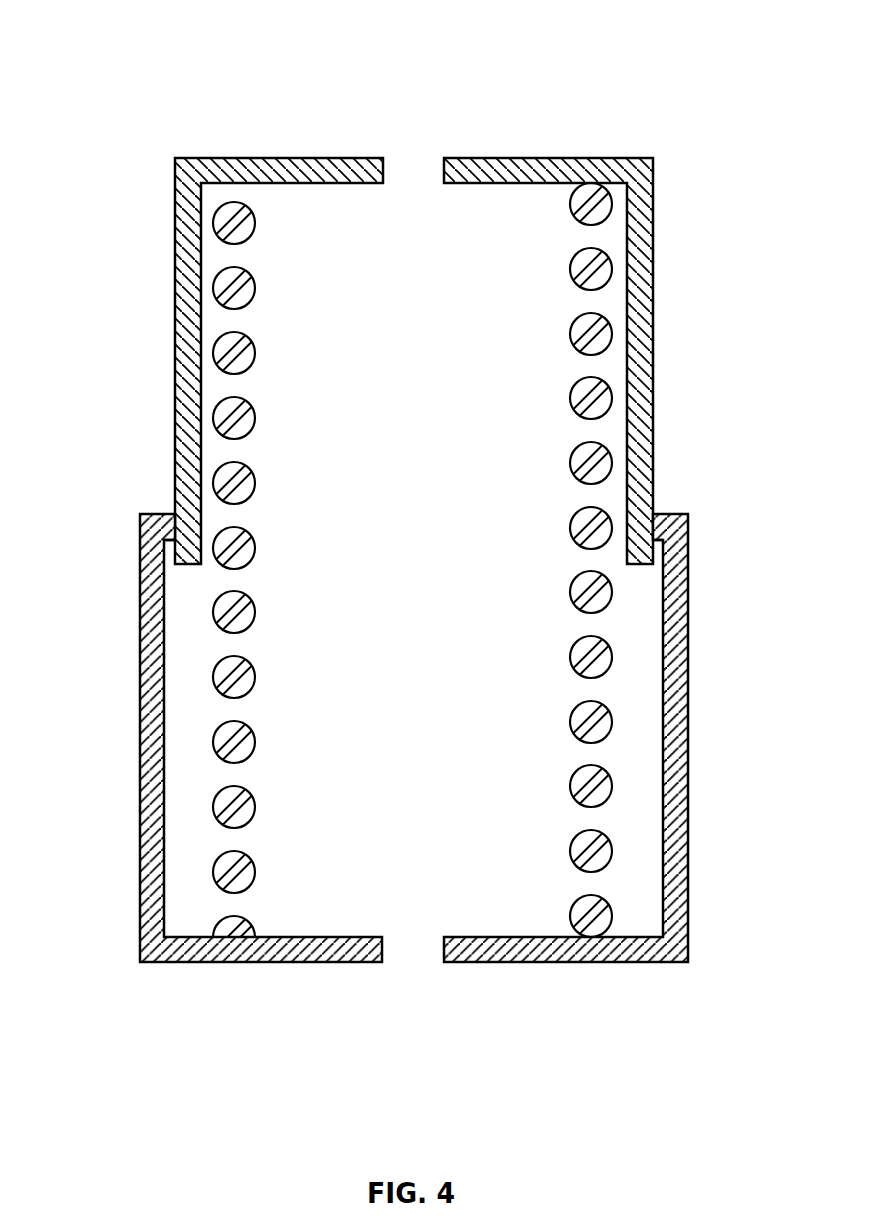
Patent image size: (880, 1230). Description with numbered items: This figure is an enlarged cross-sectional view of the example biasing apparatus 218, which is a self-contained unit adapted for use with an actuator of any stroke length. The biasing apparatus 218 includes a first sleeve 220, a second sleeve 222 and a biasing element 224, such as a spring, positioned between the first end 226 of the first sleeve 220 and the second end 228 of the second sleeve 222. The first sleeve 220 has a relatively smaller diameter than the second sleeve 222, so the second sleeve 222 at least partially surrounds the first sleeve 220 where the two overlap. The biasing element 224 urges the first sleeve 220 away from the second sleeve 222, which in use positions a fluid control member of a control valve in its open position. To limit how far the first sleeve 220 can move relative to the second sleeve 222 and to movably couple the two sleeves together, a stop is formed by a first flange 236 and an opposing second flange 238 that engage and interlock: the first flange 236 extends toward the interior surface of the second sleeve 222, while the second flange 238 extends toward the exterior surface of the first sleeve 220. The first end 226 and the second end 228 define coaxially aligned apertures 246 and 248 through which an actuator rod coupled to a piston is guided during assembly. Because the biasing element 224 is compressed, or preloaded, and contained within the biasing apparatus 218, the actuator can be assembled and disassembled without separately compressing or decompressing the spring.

The biasing apparatus 218 is at (715, 50).
The first sleeve 220 is at (638, 375).
The second sleeve 222 is at (668, 717).
The biasing element 224 is at (590, 255).
The first end 226 is at (343, 158).
The second end 228 is at (275, 948).
The first flange 236 is at (178, 552).
The second flange 238 is at (155, 528).
The aperture 246 is at (441, 170).
The aperture 248 is at (443, 943).